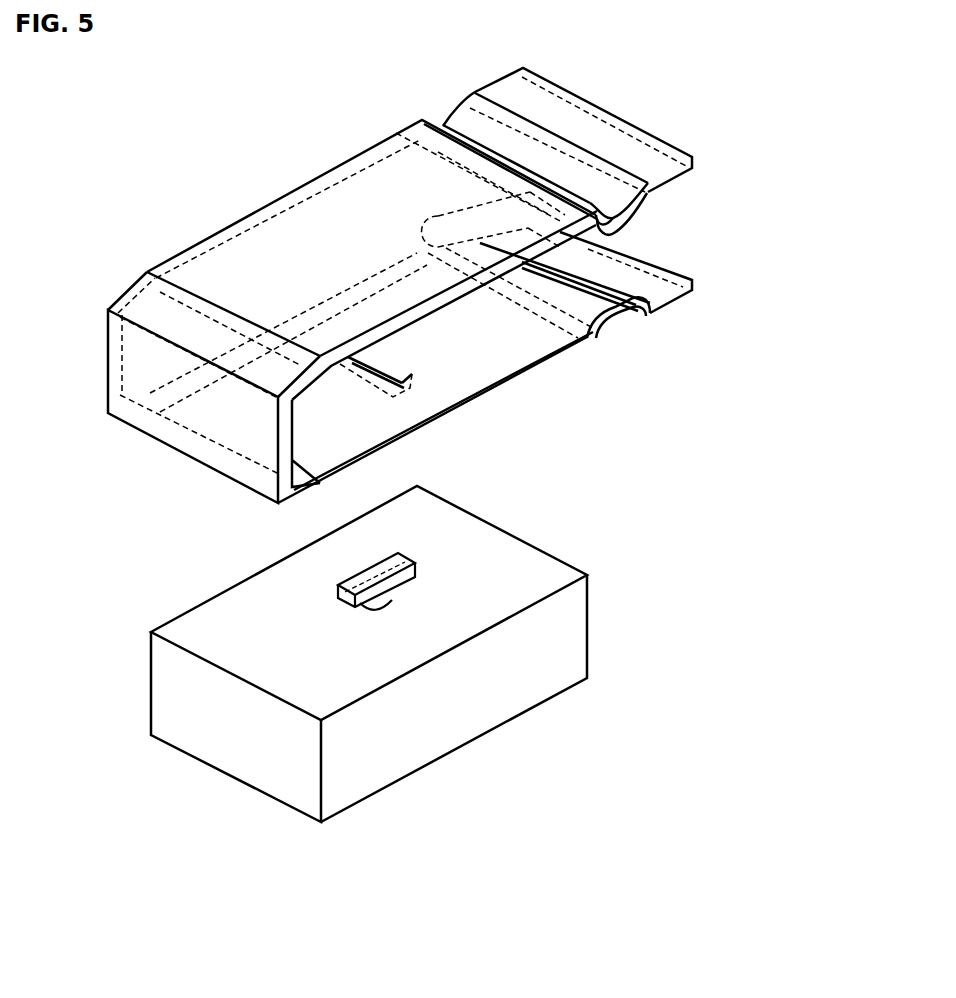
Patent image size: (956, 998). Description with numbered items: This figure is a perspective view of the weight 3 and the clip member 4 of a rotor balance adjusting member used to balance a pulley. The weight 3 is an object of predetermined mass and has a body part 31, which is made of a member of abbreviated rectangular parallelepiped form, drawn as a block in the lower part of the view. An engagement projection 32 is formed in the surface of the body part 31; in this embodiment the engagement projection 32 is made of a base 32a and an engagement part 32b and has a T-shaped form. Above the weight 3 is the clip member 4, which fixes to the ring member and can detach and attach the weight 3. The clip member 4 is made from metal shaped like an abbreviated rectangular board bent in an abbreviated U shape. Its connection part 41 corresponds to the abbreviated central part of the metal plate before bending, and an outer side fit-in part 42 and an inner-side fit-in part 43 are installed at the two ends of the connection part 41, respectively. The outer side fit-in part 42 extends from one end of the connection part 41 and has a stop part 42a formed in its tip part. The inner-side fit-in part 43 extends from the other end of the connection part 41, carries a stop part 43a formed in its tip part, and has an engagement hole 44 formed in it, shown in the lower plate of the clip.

The weight 3 is at (376, 832).
The body part 31 is at (571, 635).
The engagement projection 32 is at (530, 484).
The base 32a is at (383, 598).
The engagement part 32b is at (388, 553).
The clip member 4 is at (355, 89).
The connection part 41 is at (143, 373).
The outer side fit-in part 42 is at (318, 217).
The stop part 42a is at (640, 205).
The inner-side fit-in part 43 is at (467, 380).
The stop part 43a is at (624, 316).
The engagement hole 44 is at (407, 378).